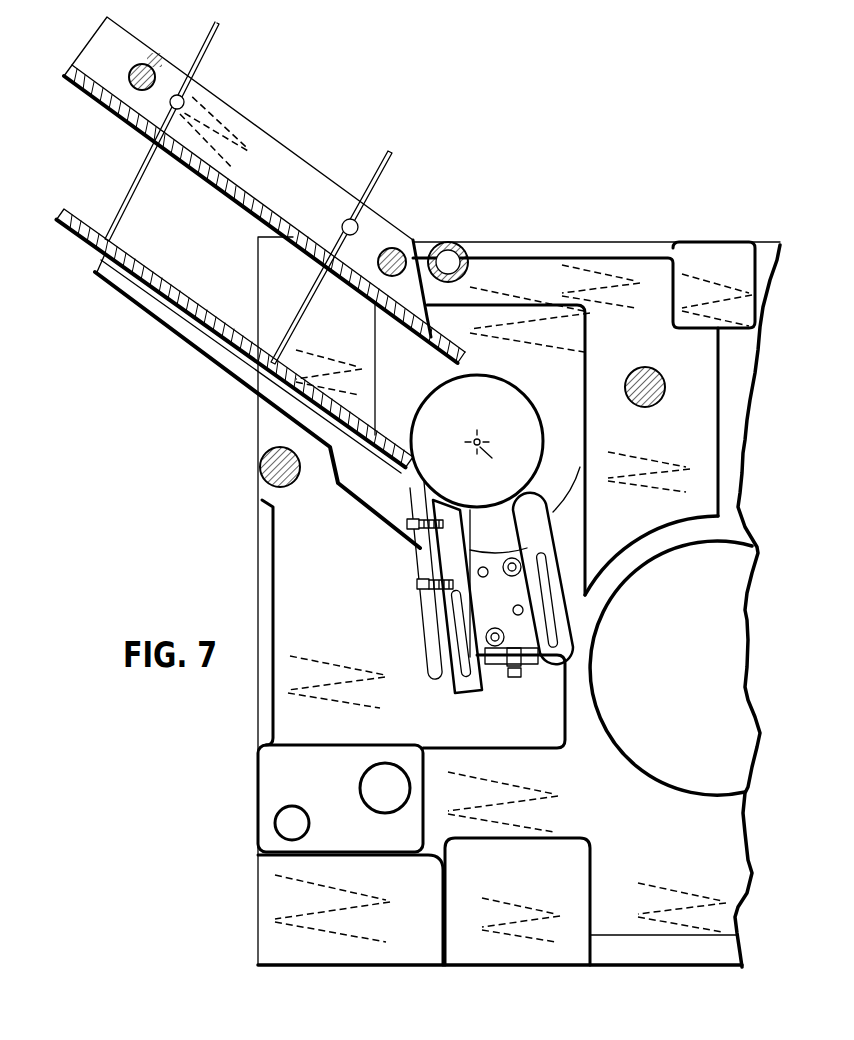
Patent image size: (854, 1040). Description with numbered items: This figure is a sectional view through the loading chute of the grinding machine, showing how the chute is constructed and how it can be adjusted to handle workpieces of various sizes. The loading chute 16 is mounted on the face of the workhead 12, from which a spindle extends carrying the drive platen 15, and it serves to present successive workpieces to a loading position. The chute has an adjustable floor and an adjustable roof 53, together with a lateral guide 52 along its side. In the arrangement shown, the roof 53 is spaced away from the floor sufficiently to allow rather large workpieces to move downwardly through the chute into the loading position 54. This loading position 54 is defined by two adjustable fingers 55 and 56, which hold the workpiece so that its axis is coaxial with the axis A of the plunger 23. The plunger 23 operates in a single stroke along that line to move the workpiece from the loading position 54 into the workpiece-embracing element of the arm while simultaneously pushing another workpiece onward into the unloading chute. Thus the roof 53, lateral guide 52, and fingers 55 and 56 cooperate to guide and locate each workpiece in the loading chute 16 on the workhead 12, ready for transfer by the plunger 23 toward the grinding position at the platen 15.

The workhead 12 is at (552, 268).
The drive platen 15 is at (743, 725).
The loading chute 16 is at (175, 322).
The plunger 23 is at (500, 390).
The lateral guide 52 is at (69, 226).
The adjustable roof 53 is at (222, 185).
The loading position 54 is at (469, 428).
The adjustable finger 55 is at (447, 557).
The adjustable finger 56 is at (543, 538).